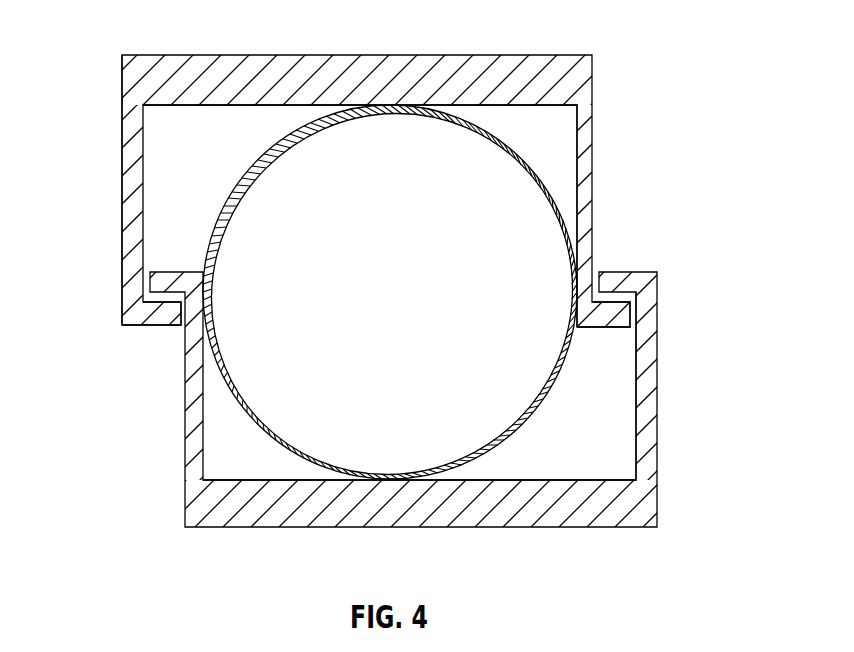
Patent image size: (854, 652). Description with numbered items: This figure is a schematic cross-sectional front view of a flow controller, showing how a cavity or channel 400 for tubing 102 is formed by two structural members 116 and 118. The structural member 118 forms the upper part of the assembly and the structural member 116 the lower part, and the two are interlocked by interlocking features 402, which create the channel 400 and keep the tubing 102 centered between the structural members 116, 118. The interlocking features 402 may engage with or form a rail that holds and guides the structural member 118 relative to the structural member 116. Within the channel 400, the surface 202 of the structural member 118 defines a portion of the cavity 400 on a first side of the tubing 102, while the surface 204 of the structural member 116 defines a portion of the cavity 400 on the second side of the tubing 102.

The structural member 118 is at (415, 68).
The structural member 116 is at (592, 513).
The tubing 102 is at (412, 305).
The surface 202 is at (546, 106).
The surface 204 is at (607, 478).
The interlocking features 402 is at (659, 264).
The cavity or channel 400 is at (165, 142).